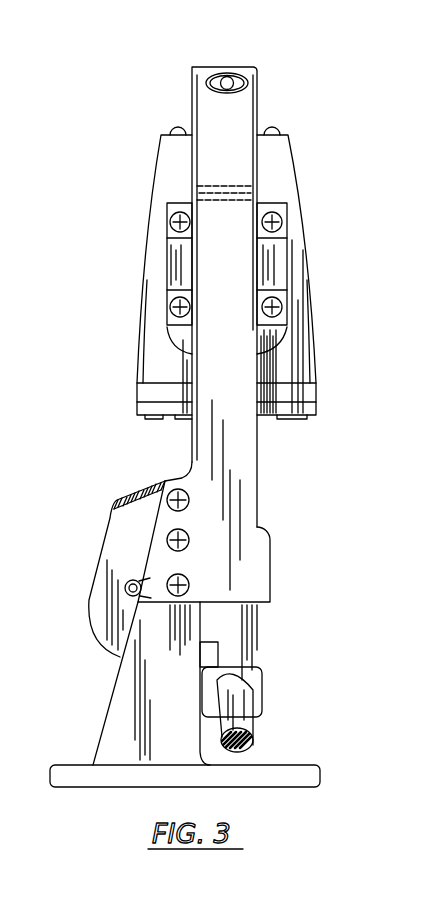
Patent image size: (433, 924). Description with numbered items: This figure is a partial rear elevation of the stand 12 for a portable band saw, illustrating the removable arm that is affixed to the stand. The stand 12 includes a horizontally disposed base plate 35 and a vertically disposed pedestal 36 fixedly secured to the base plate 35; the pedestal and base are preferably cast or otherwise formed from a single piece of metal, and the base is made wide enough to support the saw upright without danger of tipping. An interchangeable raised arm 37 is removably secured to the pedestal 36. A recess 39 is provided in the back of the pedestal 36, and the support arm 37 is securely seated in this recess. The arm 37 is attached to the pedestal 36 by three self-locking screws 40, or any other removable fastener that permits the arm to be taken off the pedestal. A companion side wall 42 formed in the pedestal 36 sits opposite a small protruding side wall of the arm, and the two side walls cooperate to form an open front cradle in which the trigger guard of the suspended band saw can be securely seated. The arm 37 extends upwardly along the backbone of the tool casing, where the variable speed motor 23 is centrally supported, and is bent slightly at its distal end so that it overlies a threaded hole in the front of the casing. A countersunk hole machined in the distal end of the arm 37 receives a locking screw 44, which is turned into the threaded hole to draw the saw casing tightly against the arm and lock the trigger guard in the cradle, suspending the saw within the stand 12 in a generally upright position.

The stand 12 is at (277, 98).
The variable speed motor 23 is at (313, 285).
The base plate 35 is at (297, 789).
The pedestal 36 is at (107, 700).
The raised arm 37 is at (278, 443).
The recess 39 is at (172, 604).
The self-locking screws 40 is at (190, 585).
The companion side wall 42 is at (153, 540).
The locking screw 44 is at (243, 78).